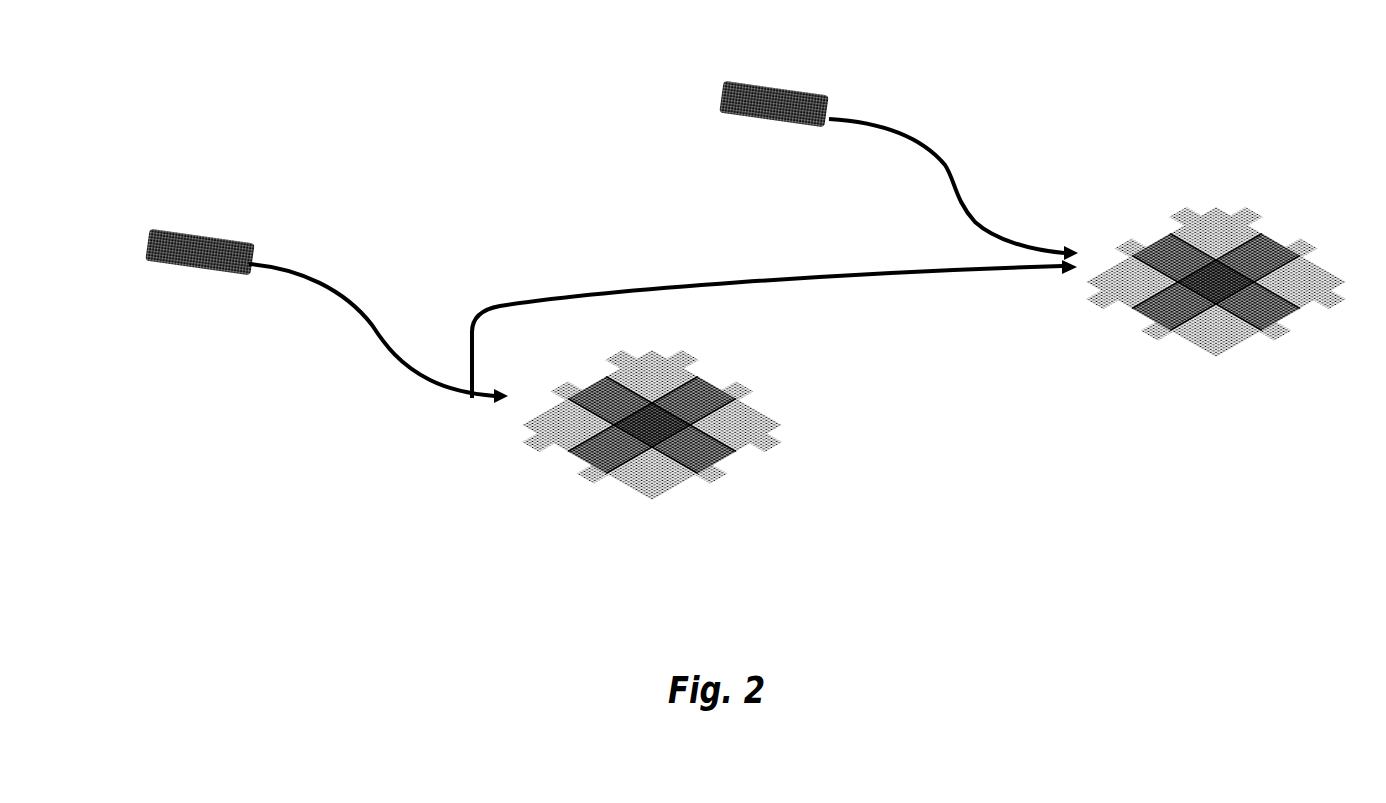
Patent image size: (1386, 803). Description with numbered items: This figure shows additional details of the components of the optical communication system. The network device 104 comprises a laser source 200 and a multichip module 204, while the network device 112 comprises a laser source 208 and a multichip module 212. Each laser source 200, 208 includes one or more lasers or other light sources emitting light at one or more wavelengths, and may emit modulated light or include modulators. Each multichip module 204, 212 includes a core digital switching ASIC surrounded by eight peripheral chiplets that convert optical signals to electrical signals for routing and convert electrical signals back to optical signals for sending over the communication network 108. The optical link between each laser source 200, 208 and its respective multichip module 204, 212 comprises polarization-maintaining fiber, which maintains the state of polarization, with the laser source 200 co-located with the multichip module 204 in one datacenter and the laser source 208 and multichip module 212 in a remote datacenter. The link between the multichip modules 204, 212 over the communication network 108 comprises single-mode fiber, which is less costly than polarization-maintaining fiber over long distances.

The network device 104 is at (265, 126).
The communication network 108 is at (556, 181).
The network device 112 is at (1238, 85).
The laser source 200 is at (207, 262).
The multichip module 204 is at (547, 452).
The laser source 208 is at (807, 98).
The multichip module 212 is at (1178, 348).